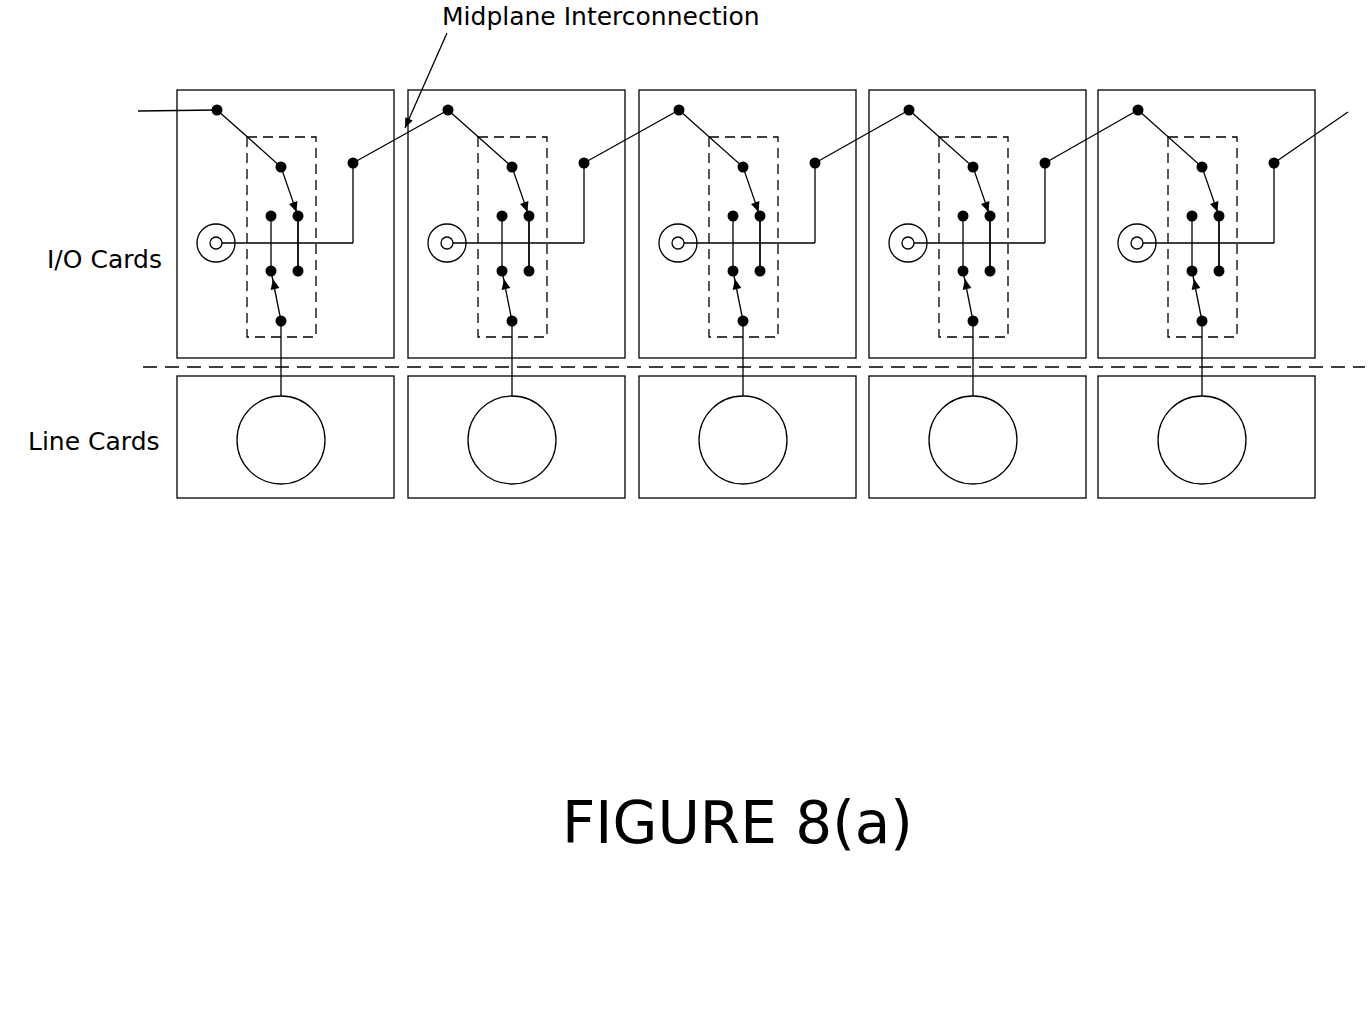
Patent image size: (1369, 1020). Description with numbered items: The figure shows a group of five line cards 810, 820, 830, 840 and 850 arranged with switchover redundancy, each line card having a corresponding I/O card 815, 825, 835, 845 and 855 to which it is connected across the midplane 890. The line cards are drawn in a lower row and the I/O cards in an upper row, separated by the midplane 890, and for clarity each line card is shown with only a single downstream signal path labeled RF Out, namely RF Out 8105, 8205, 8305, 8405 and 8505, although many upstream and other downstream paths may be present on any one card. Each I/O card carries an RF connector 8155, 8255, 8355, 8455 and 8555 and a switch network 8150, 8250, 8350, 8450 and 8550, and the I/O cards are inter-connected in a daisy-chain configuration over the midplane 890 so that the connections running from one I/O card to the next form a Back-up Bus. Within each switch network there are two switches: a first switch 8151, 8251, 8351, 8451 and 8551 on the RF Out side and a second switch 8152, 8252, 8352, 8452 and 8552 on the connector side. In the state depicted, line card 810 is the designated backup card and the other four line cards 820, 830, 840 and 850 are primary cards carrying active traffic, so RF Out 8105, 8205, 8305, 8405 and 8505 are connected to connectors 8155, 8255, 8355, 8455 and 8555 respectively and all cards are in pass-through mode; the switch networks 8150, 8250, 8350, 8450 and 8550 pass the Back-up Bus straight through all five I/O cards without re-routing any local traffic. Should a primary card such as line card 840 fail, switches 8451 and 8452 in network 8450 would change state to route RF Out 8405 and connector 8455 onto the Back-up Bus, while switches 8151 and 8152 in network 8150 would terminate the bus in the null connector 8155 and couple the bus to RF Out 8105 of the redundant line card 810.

The midplane 890 is at (707, 366).
The I/O card 815 is at (285, 224).
The I/O card 825 is at (516, 224).
The I/O card 835 is at (747, 224).
The I/O card 845 is at (977, 224).
The I/O card 855 is at (1206, 224).
The line card 810 is at (285, 437).
The line card 820 is at (516, 437).
The line card 830 is at (747, 437).
The line card 840 is at (977, 437).
The line card 850 is at (1206, 437).
The switch network 8150 is at (316, 305).
The switch network 8250 is at (547, 305).
The switch network 8350 is at (778, 305).
The switch network 8450 is at (1008, 305).
The switch network 8550 is at (1237, 305).
The switch 8151 is at (340, 257).
The switch 8251 is at (571, 257).
The switch 8351 is at (802, 257).
The switch 8451 is at (1032, 257).
The switch 8551 is at (1261, 257).
The switch 8152 is at (226, 206).
The switch 8252 is at (457, 206).
The switch 8352 is at (688, 206).
The switch 8452 is at (918, 206).
The switch 8552 is at (1147, 206).
The RF connector 8155 is at (218, 262).
The RF connector 8255 is at (449, 262).
The RF connector 8355 is at (680, 262).
The RF connector 8455 is at (910, 262).
The RF connector 8555 is at (1139, 262).
The RF Out 8105 is at (328, 440).
The RF Out 8205 is at (559, 440).
The RF Out 8305 is at (790, 440).
The RF Out 8405 is at (1020, 440).
The RF Out 8505 is at (1249, 440).